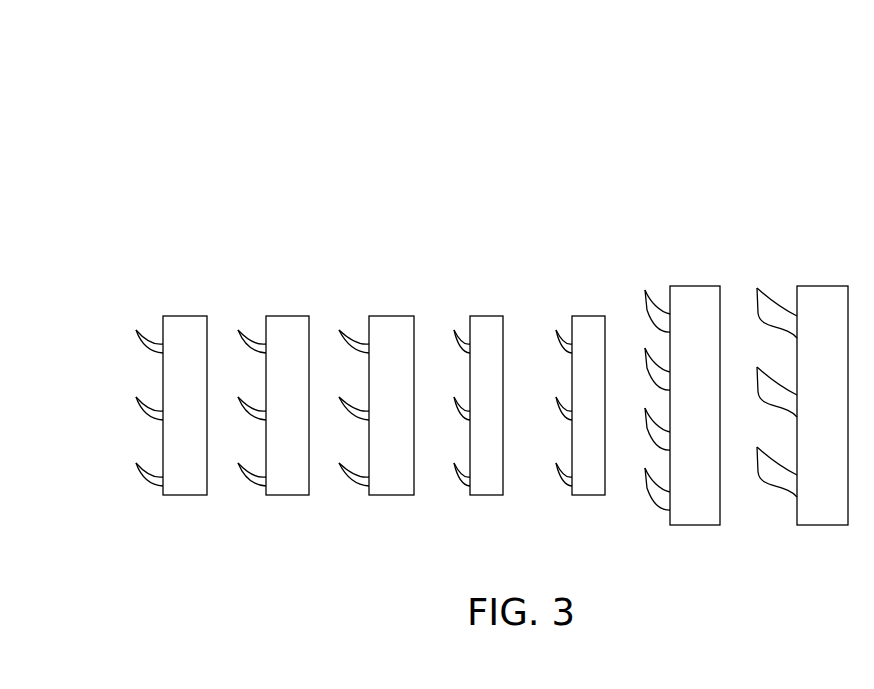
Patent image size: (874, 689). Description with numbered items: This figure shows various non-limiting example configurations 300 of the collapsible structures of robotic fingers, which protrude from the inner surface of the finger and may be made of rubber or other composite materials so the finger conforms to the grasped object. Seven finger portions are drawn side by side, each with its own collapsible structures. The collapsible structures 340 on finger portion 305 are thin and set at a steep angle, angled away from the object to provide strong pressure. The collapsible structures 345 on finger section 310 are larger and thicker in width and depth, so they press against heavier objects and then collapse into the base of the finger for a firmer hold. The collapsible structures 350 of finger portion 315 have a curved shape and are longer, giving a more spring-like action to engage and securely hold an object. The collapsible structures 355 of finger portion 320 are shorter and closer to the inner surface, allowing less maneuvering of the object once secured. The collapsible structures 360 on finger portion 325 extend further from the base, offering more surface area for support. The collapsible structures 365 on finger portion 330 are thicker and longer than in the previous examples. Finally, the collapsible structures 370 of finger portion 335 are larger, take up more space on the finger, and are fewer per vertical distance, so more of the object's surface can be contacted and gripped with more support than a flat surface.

The lamp assembly 300 is at (476, 302).
The finger portion 305 is at (158, 369).
The finger section 310 is at (260, 369).
The finger portion 315 is at (364, 369).
The finger portion 320 is at (463, 369).
The finger portion 325 is at (564, 369).
The finger portion 330 is at (669, 363).
The finger portion 335 is at (794, 355).
The collapsible structures 340 is at (152, 485).
The collapsible structures 345 is at (253, 485).
The collapsible structures 350 is at (357, 485).
The collapsible structures 355 is at (467, 482).
The collapsible structures 360 is at (568, 482).
The collapsible structures 365 is at (658, 507).
The collapsible structures 370 is at (778, 495).